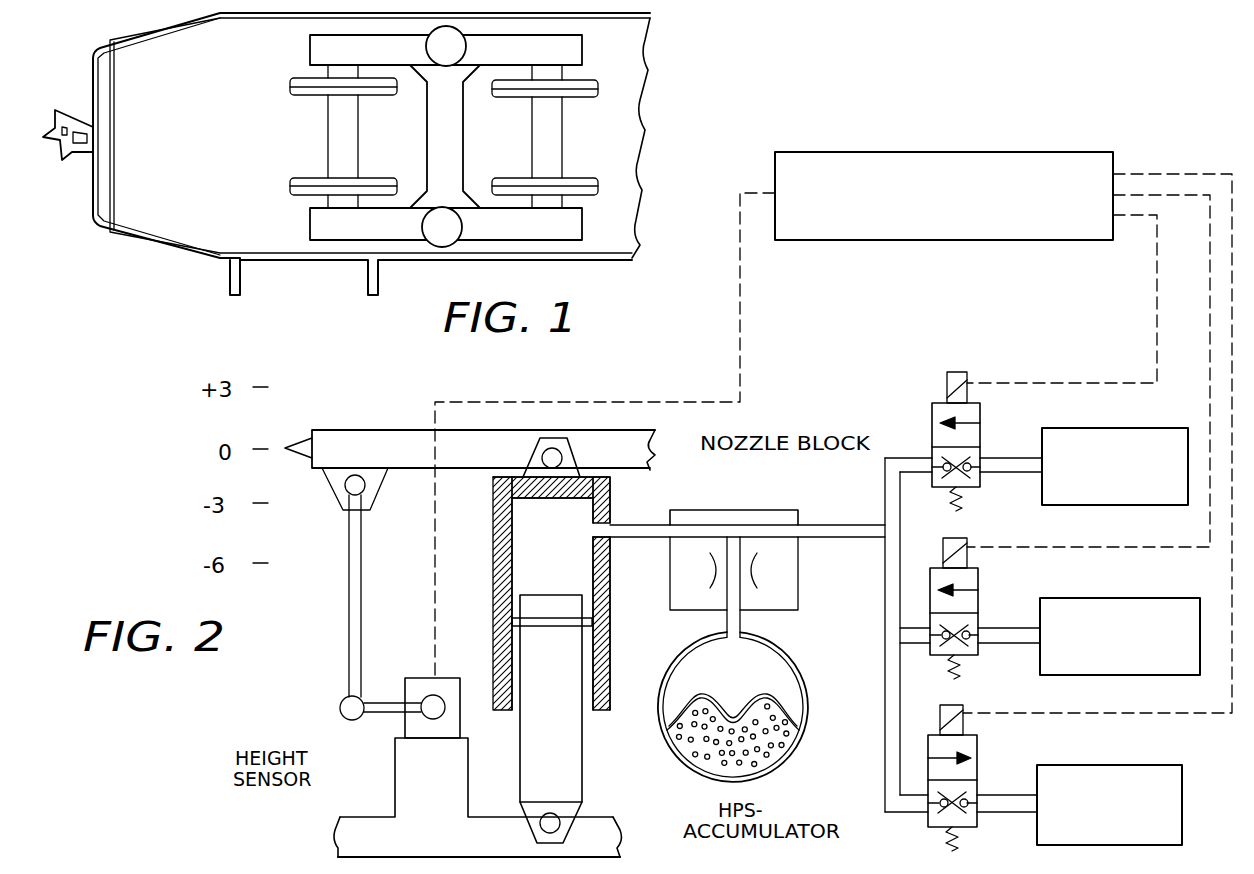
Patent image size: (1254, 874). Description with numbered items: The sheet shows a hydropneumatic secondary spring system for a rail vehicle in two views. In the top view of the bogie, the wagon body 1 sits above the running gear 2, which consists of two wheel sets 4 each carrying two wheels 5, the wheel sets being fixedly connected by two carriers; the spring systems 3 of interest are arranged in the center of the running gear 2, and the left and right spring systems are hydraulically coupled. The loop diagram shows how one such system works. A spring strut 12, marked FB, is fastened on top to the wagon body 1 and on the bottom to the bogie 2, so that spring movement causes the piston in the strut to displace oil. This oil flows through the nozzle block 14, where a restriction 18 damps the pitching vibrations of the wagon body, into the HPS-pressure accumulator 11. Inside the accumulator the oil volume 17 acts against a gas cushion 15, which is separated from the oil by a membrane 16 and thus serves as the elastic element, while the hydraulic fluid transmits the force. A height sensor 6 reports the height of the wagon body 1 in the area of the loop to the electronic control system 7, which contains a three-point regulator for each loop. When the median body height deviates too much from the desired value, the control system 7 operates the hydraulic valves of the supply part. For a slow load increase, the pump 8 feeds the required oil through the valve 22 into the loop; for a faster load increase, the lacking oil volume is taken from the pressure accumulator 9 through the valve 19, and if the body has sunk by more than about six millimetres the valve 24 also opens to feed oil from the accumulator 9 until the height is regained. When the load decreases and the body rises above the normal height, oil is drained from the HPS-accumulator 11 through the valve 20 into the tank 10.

In FIG. 1, the wagon body 1 is at (188, 255).
In FIG. 2, the wagon body 1 is at (400, 447).
In FIG. 1, the running gear 2 is at (570, 48).
In FIG. 2, the running gear 2 is at (378, 837).
In FIG. 1, the spring system 3 is at (446, 62).
In FIG. 1, the wheel set 4 is at (333, 148).
In FIG. 1, the wheel 5 is at (587, 100).
In FIG. 2, the height sensor 6 is at (427, 677).
In FIG. 2, the electronic control system 7 is at (993, 152).
In FIG. 2, the pump 8 is at (1118, 493).
In FIG. 2, the pressure accumulator 9 is at (1110, 598).
In FIG. 2, the tank 10 is at (1155, 773).
In FIG. 2, the HPS-pressure accumulator 11 is at (742, 717).
In FIG. 2, the spring strut 12 is at (565, 775).
In FIG. 2, the nozzle block 14 is at (700, 510).
In FIG. 2, the gas cushion 15 is at (763, 740).
In FIG. 2, the membrane 16 is at (777, 702).
In FIG. 2, the oil volume 17 is at (687, 683).
In FIG. 2, the restriction 18 is at (750, 570).
In FIG. 2, the valve 19 is at (970, 608).
In FIG. 2, the valve 20 is at (977, 747).
In FIG. 2, the valve (GP) 22 is at (982, 415).
In FIG. 2, the valve (GS) 24 is at (980, 602).